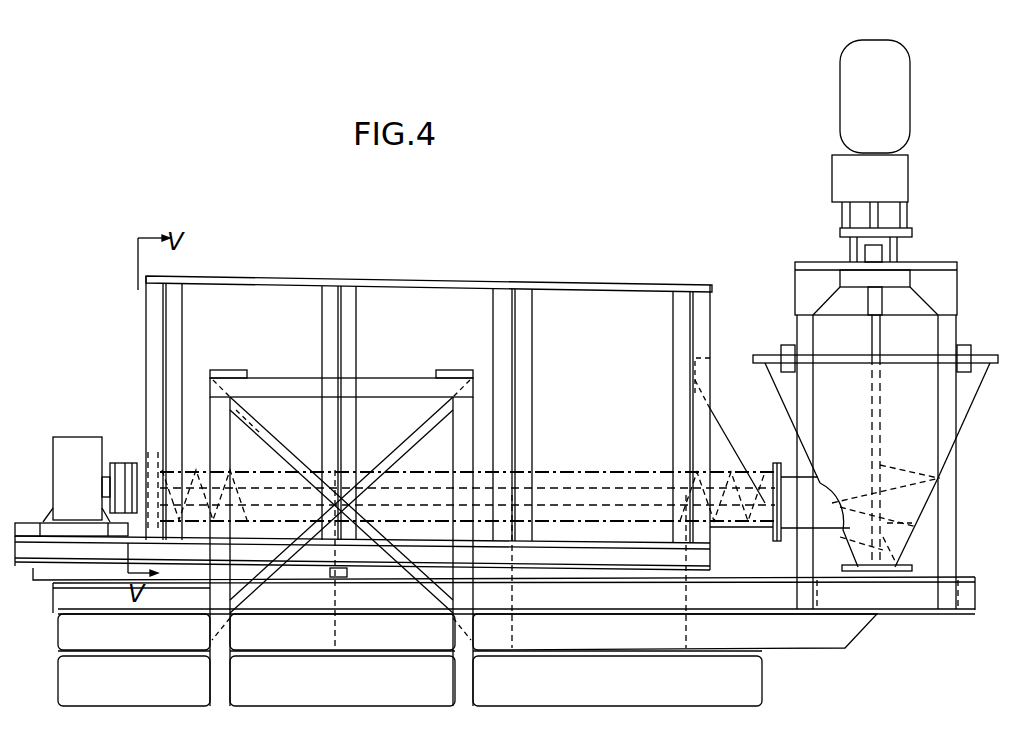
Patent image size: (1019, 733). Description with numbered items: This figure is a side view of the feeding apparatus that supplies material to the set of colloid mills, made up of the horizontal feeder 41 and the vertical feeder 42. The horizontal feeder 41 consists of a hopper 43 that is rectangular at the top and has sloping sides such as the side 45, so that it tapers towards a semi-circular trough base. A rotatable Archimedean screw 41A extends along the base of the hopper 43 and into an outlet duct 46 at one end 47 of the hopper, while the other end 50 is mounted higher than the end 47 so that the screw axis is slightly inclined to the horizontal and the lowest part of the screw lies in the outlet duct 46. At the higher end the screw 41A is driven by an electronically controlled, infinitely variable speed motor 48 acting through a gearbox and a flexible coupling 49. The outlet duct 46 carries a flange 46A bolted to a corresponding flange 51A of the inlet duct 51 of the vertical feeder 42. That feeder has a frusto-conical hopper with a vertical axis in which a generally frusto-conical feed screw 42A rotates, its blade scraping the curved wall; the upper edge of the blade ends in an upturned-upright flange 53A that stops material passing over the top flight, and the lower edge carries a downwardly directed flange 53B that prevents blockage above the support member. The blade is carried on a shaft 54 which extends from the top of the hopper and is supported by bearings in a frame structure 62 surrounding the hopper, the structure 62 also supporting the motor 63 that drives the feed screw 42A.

The horizontal feeder 41 is at (126, 297).
The Archimedean screw 41A is at (467, 538).
The vertical feeder 42 is at (973, 262).
The feed screw 42A is at (840, 500).
The hopper 43 is at (163, 388).
The sloping side 45 is at (420, 324).
The outlet duct 46 is at (762, 465).
The flange 46A is at (772, 537).
The end of the hopper 47 is at (724, 328).
The motor 48 is at (62, 450).
The flexible coupling 49 is at (118, 463).
The end of the hopper 50 is at (136, 360).
The inlet duct 51 is at (825, 537).
The flange 51A is at (779, 542).
The upturned-upright flange 53A is at (880, 463).
The downwardly directed flange 53B is at (850, 537).
The shaft 54 is at (879, 336).
The frame structure 62 is at (948, 330).
The motor 63 is at (911, 122).